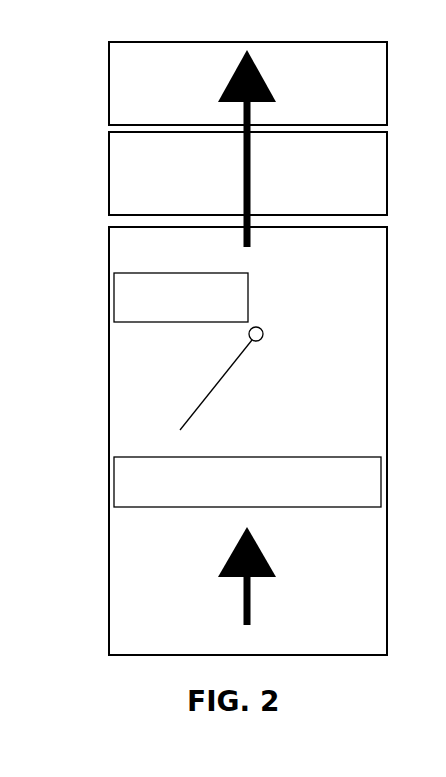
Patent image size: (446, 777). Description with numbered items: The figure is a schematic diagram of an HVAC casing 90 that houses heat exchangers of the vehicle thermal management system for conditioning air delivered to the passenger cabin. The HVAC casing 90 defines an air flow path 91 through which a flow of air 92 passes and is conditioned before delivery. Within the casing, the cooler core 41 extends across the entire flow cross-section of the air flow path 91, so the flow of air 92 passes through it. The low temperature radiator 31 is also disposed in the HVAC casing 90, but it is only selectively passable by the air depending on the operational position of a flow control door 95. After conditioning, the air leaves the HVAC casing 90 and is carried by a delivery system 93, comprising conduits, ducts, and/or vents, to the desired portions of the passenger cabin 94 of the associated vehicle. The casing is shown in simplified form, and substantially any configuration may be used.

The HVAC casing 90 is at (110, 523).
The air flow path 91 is at (147, 593).
The flow of air 92 is at (250, 150).
The delivery system 93 is at (121, 175).
The passenger cabin 94 is at (121, 82).
The flow control door 95 is at (263, 331).
The low temperature radiator 31 is at (116, 299).
The cooler core 41 is at (112, 480).